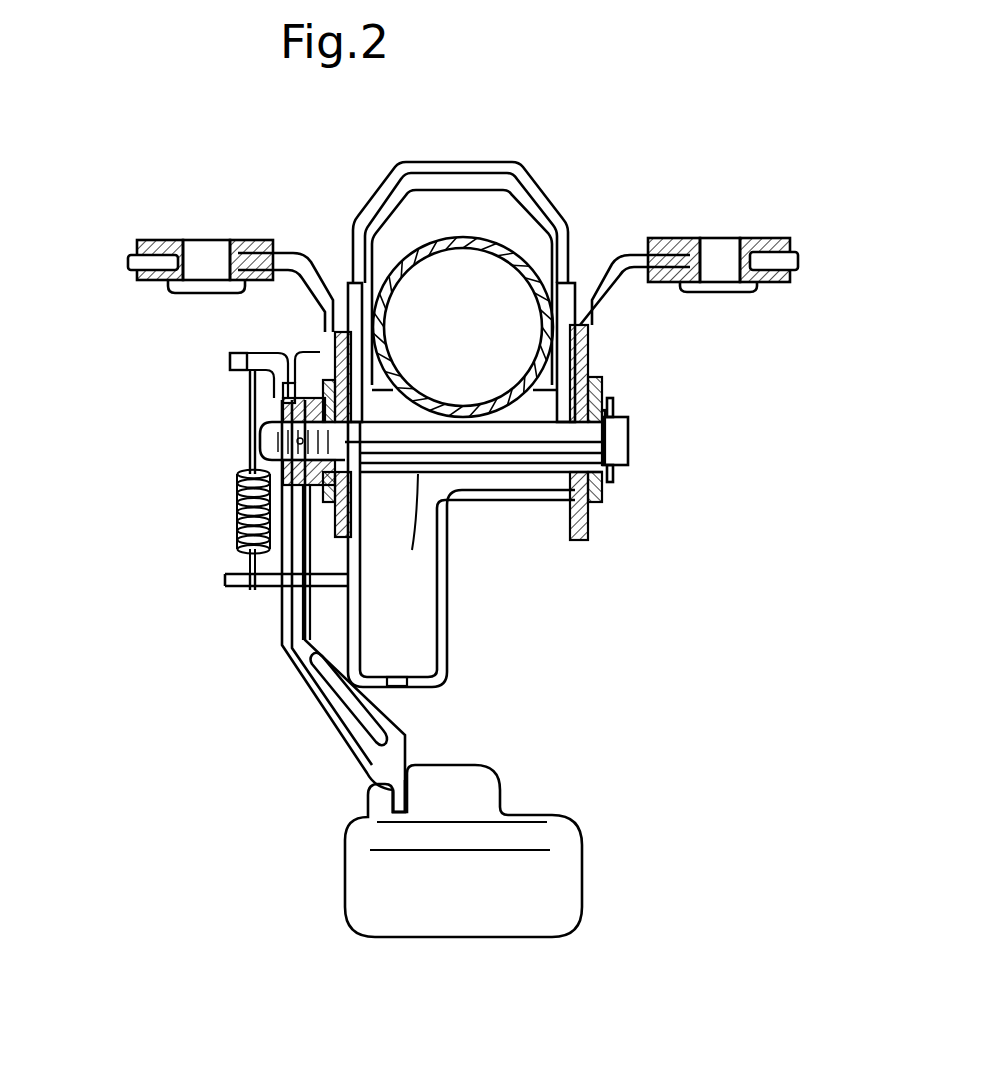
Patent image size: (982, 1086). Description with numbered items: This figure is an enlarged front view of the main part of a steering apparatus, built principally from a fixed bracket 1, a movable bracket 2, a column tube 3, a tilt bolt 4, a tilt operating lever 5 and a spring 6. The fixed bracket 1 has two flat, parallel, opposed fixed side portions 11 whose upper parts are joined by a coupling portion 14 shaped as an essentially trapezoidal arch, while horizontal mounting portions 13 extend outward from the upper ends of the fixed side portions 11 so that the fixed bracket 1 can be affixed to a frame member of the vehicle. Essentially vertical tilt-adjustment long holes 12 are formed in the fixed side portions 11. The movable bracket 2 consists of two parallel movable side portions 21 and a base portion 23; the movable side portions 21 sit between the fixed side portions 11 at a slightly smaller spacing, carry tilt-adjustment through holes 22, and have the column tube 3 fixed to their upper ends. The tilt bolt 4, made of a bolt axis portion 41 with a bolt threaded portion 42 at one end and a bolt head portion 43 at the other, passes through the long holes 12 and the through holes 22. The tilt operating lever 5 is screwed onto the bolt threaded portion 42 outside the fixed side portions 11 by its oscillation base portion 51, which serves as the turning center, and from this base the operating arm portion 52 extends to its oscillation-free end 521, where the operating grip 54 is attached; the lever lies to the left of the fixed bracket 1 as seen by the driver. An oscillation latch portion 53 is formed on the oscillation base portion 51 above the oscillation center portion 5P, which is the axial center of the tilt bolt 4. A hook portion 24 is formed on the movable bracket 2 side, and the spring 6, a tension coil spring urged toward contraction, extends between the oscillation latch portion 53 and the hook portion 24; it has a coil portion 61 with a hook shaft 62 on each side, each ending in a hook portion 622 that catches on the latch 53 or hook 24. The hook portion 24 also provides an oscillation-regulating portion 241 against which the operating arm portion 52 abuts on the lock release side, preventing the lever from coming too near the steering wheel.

The fixed bracket 1 is at (624, 245).
The movable bracket 2 is at (452, 562).
The column tube 3 is at (440, 245).
The tilt bolt 4 is at (632, 424).
The tilt operating lever 5 is at (327, 742).
The oscillation center portion 5P is at (172, 468).
The spring 6 is at (236, 524).
The fixed side portion 11 is at (333, 342).
The tilt-adjustment long hole 12 is at (603, 385).
The mounting portion 13 is at (145, 246).
The coupling portion 14 is at (545, 178).
The movable side portion 21 is at (285, 388).
The tilt-adjustment through hole 22 is at (268, 445).
The base portion 23 is at (432, 690).
The hook portion 24 is at (237, 590).
The bolt axis portion 41 is at (408, 529).
The bolt threaded portion 42 is at (262, 432).
The bolt head portion 43 is at (630, 468).
The oscillation base portion 51 is at (283, 406).
The operating arm portion 52 is at (282, 655).
The oscillation latch portion 53 is at (232, 357).
The operating grip 54 is at (585, 877).
The coil portion 61 is at (246, 550).
The hook shaft 62 is at (248, 405).
The oscillation-regulating portion 241 is at (327, 585).
The oscillation-free end 521 is at (395, 795).
The hook portion 622 is at (243, 345).